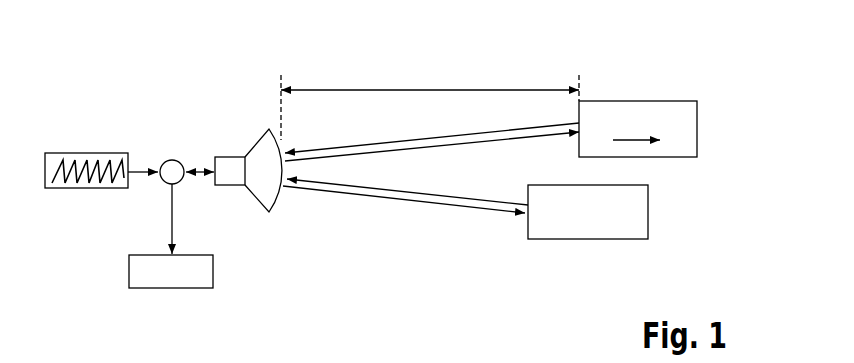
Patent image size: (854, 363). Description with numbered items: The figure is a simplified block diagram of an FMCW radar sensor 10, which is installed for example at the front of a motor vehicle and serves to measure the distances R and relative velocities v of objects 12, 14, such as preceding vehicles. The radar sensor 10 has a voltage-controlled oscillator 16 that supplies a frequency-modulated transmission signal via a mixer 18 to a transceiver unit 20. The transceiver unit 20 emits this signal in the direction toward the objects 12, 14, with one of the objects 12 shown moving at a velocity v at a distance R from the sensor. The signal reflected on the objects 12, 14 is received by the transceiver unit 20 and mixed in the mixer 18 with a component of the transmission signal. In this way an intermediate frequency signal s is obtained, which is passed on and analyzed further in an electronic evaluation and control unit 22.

The FMCW radar sensor 10 is at (110, 80).
The object 12 is at (672, 101).
The object 14 is at (559, 239).
The voltage-controlled oscillator 16 is at (65, 188).
The mixer 18 is at (172, 157).
The transceiver unit 20 is at (230, 157).
The electronic evaluation and control unit 22 is at (213, 270).